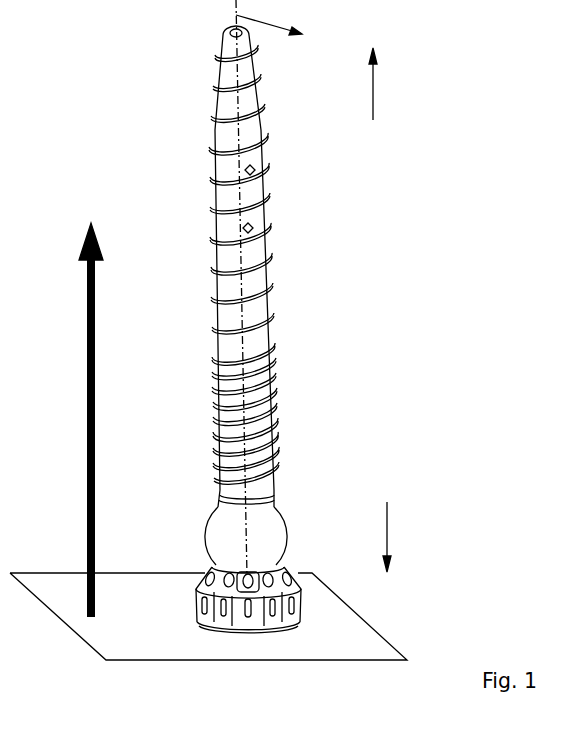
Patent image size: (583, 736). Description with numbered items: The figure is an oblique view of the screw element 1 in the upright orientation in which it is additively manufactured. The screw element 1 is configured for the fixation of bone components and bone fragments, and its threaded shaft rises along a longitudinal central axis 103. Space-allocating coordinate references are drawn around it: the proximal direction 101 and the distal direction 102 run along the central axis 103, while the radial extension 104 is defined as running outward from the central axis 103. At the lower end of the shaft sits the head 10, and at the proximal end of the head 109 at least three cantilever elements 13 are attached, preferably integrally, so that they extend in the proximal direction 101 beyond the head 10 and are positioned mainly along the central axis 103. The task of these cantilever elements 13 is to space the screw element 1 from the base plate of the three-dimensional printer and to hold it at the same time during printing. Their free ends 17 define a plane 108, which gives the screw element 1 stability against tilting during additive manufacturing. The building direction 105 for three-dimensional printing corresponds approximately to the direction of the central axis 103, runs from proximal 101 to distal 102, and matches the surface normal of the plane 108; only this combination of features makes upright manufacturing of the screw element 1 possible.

The screw element 1 is at (66, 87).
The head 10 is at (217, 534).
The cantilever elements 13 is at (250, 598).
The free ends 17 is at (218, 626).
The proximal direction 101 is at (406, 537).
The distal direction 102 is at (393, 84).
The central axis 103 is at (230, 0).
The radial extension 104 is at (287, 31).
The building direction 105 is at (75, 420).
The plane 108 is at (210, 628).
The proximal end of the head 109 is at (290, 560).